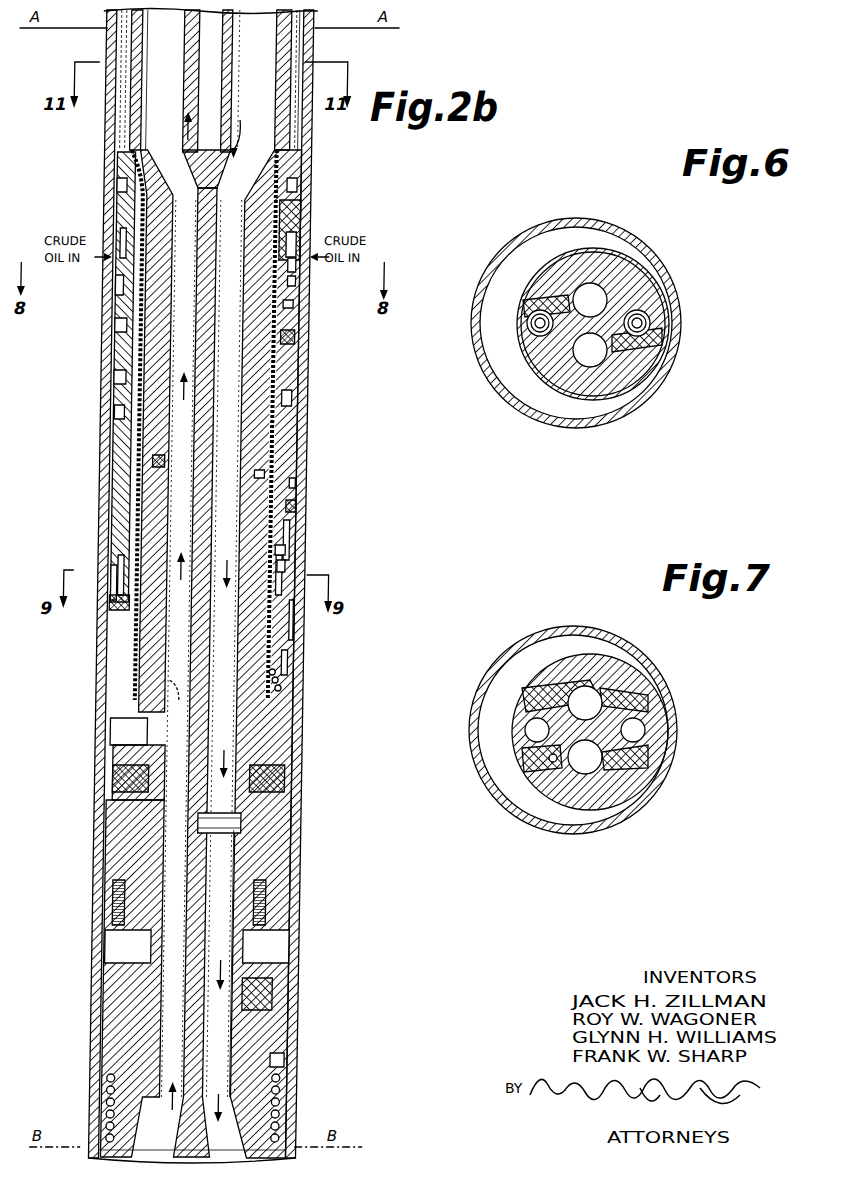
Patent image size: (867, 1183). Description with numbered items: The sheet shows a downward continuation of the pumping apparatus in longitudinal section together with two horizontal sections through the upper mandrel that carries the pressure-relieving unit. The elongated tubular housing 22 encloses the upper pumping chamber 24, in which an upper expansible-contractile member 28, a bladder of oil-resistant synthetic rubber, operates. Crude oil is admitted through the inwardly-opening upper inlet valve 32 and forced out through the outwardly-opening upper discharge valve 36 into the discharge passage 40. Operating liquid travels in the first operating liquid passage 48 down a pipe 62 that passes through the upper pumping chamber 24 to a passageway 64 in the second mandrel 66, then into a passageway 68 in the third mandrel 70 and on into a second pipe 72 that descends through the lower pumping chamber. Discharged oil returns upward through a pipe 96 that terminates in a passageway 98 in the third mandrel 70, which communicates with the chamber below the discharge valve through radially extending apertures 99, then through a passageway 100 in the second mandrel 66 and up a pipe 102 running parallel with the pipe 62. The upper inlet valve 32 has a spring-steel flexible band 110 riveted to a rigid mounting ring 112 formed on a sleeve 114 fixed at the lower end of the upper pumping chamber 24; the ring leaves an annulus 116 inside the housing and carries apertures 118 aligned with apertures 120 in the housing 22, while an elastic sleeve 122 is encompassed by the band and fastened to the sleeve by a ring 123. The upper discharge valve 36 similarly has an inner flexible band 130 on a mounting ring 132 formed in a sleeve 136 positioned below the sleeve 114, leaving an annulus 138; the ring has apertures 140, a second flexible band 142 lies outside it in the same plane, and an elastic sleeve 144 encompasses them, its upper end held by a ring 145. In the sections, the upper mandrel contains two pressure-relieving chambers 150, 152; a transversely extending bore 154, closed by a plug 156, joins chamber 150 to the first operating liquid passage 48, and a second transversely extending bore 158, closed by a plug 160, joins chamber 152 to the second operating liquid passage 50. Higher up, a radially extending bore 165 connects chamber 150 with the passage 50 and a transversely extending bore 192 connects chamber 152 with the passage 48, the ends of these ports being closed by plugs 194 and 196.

In FIG. 2B, the housing 22 is at (311, 822).
In FIG. 2B, the upper pumping chamber 24 is at (280, 398).
In FIG. 2B, the upper expansible-contractile member 28 is at (138, 38).
In FIG. 2B, the upper inlet valve 32 is at (308, 225).
In FIG. 2B, the upper discharge valve 36 is at (302, 560).
In FIG. 2B, the discharge passage 40 is at (130, 378).
In FIG. 2B, the first operating liquid passage 48 is at (238, 445).
In FIG. 6, the first operating liquid passage 48 is at (590, 300).
In FIG. 7, the first operating liquid passage 48 is at (585, 703).
In FIG. 6, the second operating liquid passage 50 is at (590, 350).
In FIG. 7, the second operating liquid passage 50 is at (585, 757).
In FIG. 2B, the pipe 62 is at (286, 55).
In FIG. 2B, the passageway 64 is at (247, 378).
In FIG. 2B, the second mandrel 66 is at (268, 472).
In FIG. 2B, the passageway 68 is at (246, 1010).
In FIG. 2B, the third mandrel 70 is at (268, 990).
In FIG. 2B, the second pipe 72 is at (300, 1135).
In FIG. 2B, the pipe 96 is at (118, 1132).
In FIG. 2B, the passageway 98 is at (158, 1000).
In FIG. 2B, the apertures 99 is at (140, 737).
In FIG. 2B, the passageway 100 is at (178, 462).
In FIG. 2B, the pipe 102 is at (142, 125).
In FIG. 2B, the flexible band 110 is at (135, 240).
In FIG. 2B, the mounting ring 112 is at (318, 238).
In FIG. 2B, the sleeve 114 is at (126, 325).
In FIG. 2B, the annulus 116 is at (124, 280).
In FIG. 2B, the apertures 118 is at (309, 282).
In FIG. 2B, the apertures 120 is at (314, 265).
In FIG. 2B, the elastic sleeve 122 is at (312, 305).
In FIG. 2B, the ring 123 is at (310, 338).
In FIG. 2B, the flexible band 130 is at (290, 565).
In FIG. 2B, the mounting ring 132 is at (311, 612).
In FIG. 2B, the sleeve 136 is at (291, 678).
In FIG. 2B, the annulus 138 is at (301, 660).
In FIG. 2B, the apertures 140 is at (132, 565).
In FIG. 2B, the second flexible band 142 is at (133, 578).
In FIG. 2B, the elastic sleeve 144 is at (126, 608).
In FIG. 2B, the ring 145 is at (308, 482).
In FIG. 6, the pressure-relieving chamber 150 is at (650, 325).
In FIG. 7, the pressure-relieving chamber 150 is at (643, 731).
In FIG. 6, the pressure-relieving chamber 152 is at (530, 330).
In FIG. 7, the pressure-relieving chamber 152 is at (533, 738).
In FIG. 7, the transversely extending bore 154 is at (650, 702).
In FIG. 7, the plug 156 is at (530, 690).
In FIG. 7, the second transversely extending bore 158 is at (553, 762).
In FIG. 7, the plug 160 is at (630, 742).
In FIG. 6, the radially extending bore 165 is at (628, 345).
In FIG. 6, the transversely extending bore 192 is at (530, 315).
In FIG. 6, the plug 194 is at (525, 400).
In FIG. 6, the plug 196 is at (605, 298).